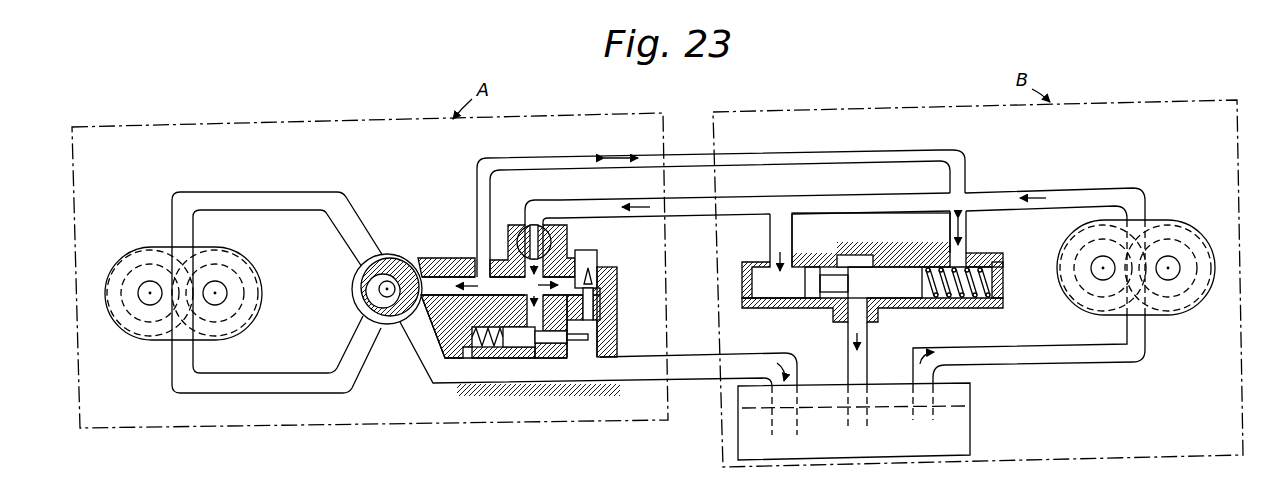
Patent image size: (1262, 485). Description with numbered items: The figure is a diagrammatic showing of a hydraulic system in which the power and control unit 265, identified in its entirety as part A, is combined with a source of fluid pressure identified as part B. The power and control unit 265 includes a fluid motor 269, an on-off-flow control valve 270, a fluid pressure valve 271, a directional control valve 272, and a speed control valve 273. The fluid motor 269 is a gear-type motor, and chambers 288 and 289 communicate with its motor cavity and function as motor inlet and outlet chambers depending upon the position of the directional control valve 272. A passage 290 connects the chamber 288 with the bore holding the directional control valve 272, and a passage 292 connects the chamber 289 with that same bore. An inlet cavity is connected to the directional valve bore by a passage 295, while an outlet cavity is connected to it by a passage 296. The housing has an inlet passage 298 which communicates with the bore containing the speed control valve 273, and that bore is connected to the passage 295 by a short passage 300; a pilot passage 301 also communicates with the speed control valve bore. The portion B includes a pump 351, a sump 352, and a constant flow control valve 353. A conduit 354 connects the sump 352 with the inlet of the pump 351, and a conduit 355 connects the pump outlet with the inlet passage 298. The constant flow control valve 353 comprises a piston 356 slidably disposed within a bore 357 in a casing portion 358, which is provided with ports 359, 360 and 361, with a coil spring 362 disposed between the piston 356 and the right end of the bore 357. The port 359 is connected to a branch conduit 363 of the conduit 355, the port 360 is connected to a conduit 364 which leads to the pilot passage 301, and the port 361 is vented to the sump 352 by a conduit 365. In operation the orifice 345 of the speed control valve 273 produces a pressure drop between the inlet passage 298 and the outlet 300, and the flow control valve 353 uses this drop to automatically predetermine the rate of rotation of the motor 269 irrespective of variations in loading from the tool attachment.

The power and control unit 265 is at (366, 147).
The fluid motor 269 is at (131, 245).
The chamber 288 is at (190, 356).
The chamber 289 is at (190, 237).
The passage 290 is at (288, 393).
The passage 292 is at (297, 191).
The directional control valve 272 is at (340, 282).
The passage 295 is at (436, 275).
The passage 296 is at (452, 384).
The pilot passage 301 is at (476, 168).
The conduit 364 is at (968, 158).
The speed control valve 273 is at (506, 224).
The orifice 345 is at (545, 213).
The inlet passage 298 is at (645, 198).
The short passage 300 is at (564, 260).
The on-off-flow control valve 270 is at (603, 256).
The fluid pressure valve 271 is at (577, 352).
The branch conduit 363 is at (777, 229).
The port 359 is at (770, 262).
The constant flow control valve 353 is at (1010, 290).
The casing portion 358 is at (818, 260).
The piston 356 is at (902, 276).
The bore 357 is at (905, 302).
The port 361 is at (847, 326).
The conduit 365 is at (850, 370).
The coil spring 362 is at (967, 297).
The port 360 is at (1000, 258).
The conduit 355 is at (1094, 189).
The pump 351 is at (1185, 220).
The conduit 354 is at (1088, 362).
The sump 352 is at (965, 424).